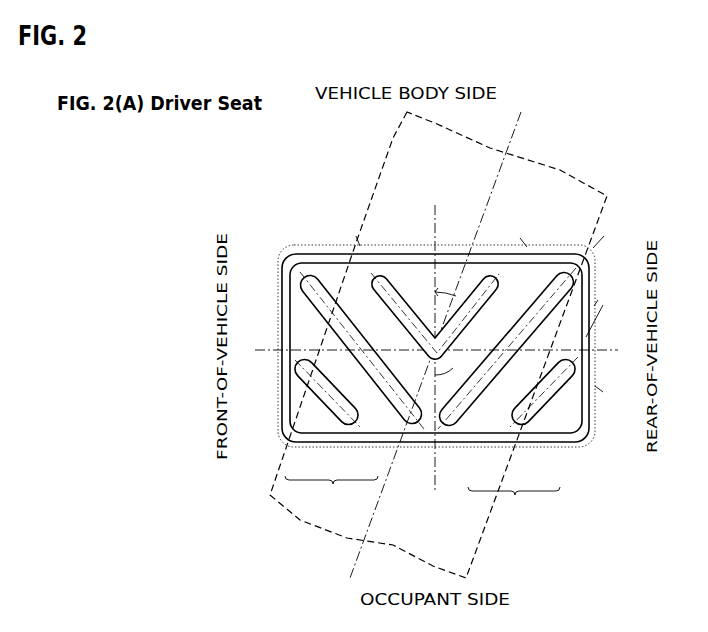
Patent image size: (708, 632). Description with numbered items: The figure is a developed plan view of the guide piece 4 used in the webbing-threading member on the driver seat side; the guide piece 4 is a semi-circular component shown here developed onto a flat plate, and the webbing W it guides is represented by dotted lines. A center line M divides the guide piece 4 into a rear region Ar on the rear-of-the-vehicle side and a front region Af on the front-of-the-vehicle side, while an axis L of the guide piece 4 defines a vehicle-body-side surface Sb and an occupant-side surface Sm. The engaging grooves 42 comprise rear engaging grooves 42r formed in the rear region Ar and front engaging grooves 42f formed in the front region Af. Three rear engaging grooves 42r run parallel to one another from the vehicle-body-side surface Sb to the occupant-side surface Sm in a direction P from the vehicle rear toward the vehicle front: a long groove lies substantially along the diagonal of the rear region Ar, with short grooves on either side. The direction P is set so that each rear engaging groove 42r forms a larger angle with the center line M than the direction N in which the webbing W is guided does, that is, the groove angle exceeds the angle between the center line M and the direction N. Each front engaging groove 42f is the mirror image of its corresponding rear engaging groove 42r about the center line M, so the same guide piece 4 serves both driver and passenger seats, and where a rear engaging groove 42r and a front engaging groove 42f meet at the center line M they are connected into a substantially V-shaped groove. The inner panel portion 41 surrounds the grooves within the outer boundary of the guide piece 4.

The guide piece 4 is at (281, 282).
The inner panel portion 41 is at (284, 330).
The engaging grooves 42 is at (422, 496).
The front engaging grooves 42f is at (343, 424).
The rear engaging grooves 42r is at (456, 425).
The webbing W is at (389, 146).
The direction in which the webbing is guided N is at (438, 337).
The center line M is at (435, 340).
The axis of the guide piece L is at (441, 350).
The direction of the rear engaging groove P is at (602, 236).
The front region Af is at (350, 235).
The rear region Ar is at (518, 236).
The vehicle-body-side surface Sb is at (603, 315).
The occupant-side surface Sm is at (609, 394).